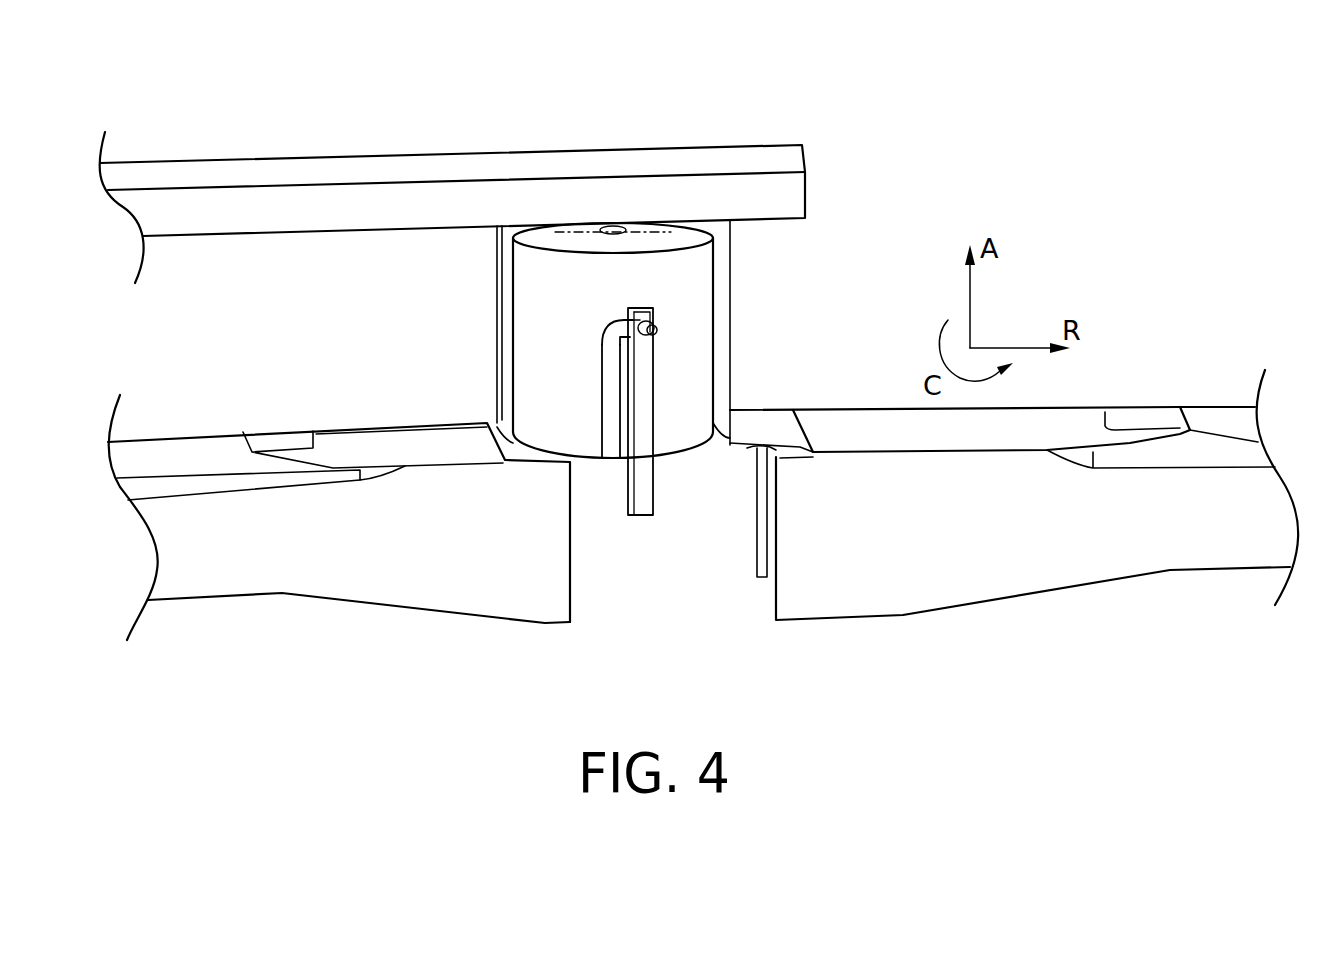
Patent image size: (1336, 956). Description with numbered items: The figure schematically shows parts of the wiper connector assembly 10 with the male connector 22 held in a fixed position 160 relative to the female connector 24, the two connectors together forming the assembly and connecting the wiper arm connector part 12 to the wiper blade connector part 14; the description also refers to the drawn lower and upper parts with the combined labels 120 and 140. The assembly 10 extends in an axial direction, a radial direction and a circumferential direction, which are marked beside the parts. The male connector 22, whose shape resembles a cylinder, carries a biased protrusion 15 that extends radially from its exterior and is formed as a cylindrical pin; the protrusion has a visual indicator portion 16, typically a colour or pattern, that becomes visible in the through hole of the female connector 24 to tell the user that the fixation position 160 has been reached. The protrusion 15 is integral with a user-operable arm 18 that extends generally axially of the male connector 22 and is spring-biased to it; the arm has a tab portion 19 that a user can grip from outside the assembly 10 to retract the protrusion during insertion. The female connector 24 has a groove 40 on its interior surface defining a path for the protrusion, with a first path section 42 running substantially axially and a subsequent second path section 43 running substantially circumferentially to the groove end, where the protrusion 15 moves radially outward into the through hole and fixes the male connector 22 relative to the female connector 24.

The wiper connector assembly 10 is at (948, 203).
The wiper arm connector part 12 is at (703, 455).
The wiper blade connector part 14 is at (483, 259).
The biased protrusion 15 is at (750, 319).
The visual indicator portion 16 is at (655, 331).
The user-operable arm 18 is at (687, 508).
The tab portion 19 is at (645, 502).
The male connector 22 is at (565, 292).
The female connector 24 is at (722, 279).
The groove 40 is at (527, 380).
The first path section 42 is at (613, 413).
The second path section 43 is at (617, 332).
The first housing 120 is at (492, 543).
The second housing rail 140 is at (468, 167).
The fixed position 160 is at (927, 173).